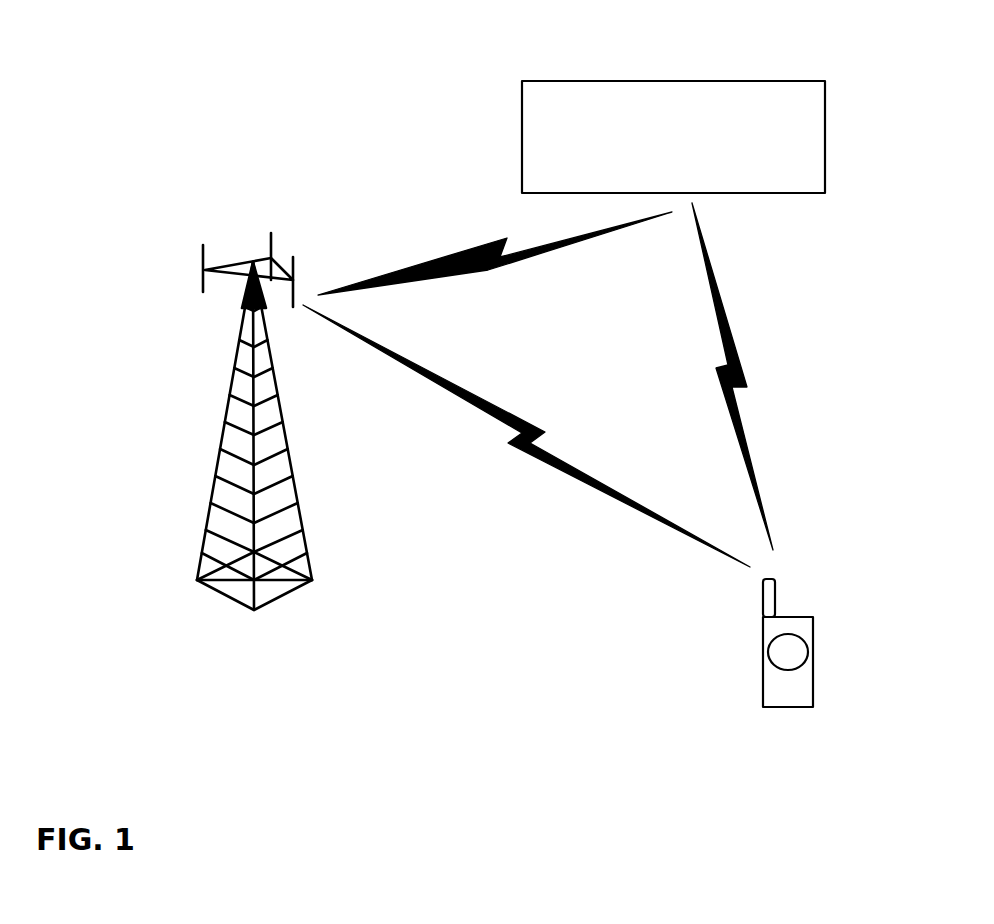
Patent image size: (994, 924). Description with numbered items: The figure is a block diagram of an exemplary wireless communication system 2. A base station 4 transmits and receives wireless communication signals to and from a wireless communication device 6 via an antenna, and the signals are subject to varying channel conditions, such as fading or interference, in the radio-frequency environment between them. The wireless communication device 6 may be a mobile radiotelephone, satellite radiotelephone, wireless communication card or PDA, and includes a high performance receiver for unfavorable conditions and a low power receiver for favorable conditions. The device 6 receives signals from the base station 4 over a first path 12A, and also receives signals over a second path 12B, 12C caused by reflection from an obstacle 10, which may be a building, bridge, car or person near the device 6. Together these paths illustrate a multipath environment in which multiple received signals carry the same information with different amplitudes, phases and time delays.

The wireless communication system 2 is at (492, 57).
The base station 4 is at (317, 559).
The wireless communication device 6 is at (828, 603).
The obstacle 10 is at (658, 164).
The first path 12A is at (437, 377).
The second path 12B is at (718, 288).
The second path 12C is at (457, 252).